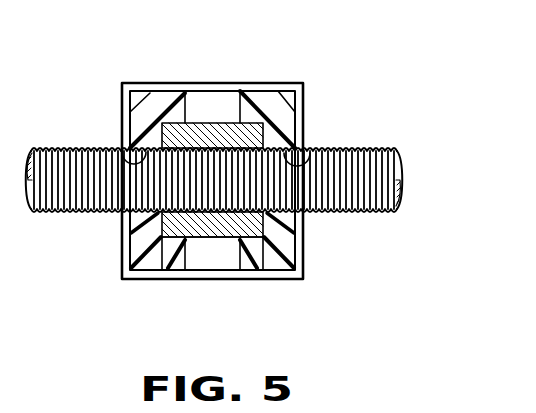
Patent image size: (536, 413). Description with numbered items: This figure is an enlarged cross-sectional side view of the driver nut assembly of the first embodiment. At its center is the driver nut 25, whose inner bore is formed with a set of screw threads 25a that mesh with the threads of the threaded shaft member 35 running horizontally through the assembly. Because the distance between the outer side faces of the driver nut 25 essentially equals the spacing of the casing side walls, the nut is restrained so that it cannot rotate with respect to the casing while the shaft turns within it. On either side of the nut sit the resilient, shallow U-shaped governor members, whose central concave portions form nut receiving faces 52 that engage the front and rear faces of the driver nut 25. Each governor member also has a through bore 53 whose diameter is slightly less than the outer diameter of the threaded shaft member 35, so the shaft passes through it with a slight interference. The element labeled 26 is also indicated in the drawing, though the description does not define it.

The driver nut 25 is at (215, 124).
The screw threads 25a is at (218, 214).
The lower resilient arms 26 is at (161, 236).
The threaded shaft member 35 is at (398, 148).
The nut receiving faces 52 is at (161, 122).
The through bore 53 is at (118, 155).